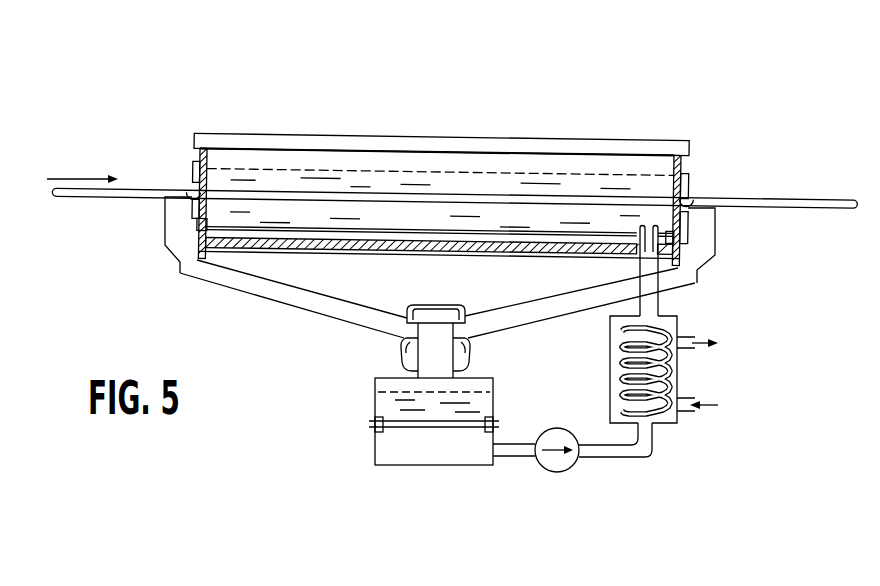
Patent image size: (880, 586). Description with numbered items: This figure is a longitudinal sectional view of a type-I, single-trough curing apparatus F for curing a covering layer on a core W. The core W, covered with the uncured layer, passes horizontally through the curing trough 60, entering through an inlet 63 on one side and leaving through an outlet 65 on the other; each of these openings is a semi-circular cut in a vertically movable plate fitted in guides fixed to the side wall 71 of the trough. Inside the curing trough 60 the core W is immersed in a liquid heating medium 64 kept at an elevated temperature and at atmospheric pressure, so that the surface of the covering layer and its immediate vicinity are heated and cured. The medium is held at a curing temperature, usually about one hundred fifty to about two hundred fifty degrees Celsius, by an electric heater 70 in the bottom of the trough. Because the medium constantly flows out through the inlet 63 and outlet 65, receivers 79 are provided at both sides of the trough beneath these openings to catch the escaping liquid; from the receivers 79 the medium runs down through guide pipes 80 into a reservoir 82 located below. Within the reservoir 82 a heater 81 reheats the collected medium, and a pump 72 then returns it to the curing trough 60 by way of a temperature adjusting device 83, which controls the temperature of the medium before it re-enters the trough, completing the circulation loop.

The liquid treatment apparatus F is at (510, 80).
The core W is at (66, 197).
The curing trough 60 is at (560, 165).
The inlet 63 is at (190, 190).
The liquid heating medium 64 is at (485, 195).
The outlet 65 is at (690, 200).
The electric heater 70 is at (370, 232).
The side wall 71 is at (196, 212).
The pump 72 is at (572, 467).
The receivers 79 is at (163, 246).
The guide pipes 80 is at (303, 302).
The heater 81 is at (402, 424).
The reservoir 82 is at (398, 385).
The temperature adjusting device 83 is at (668, 378).